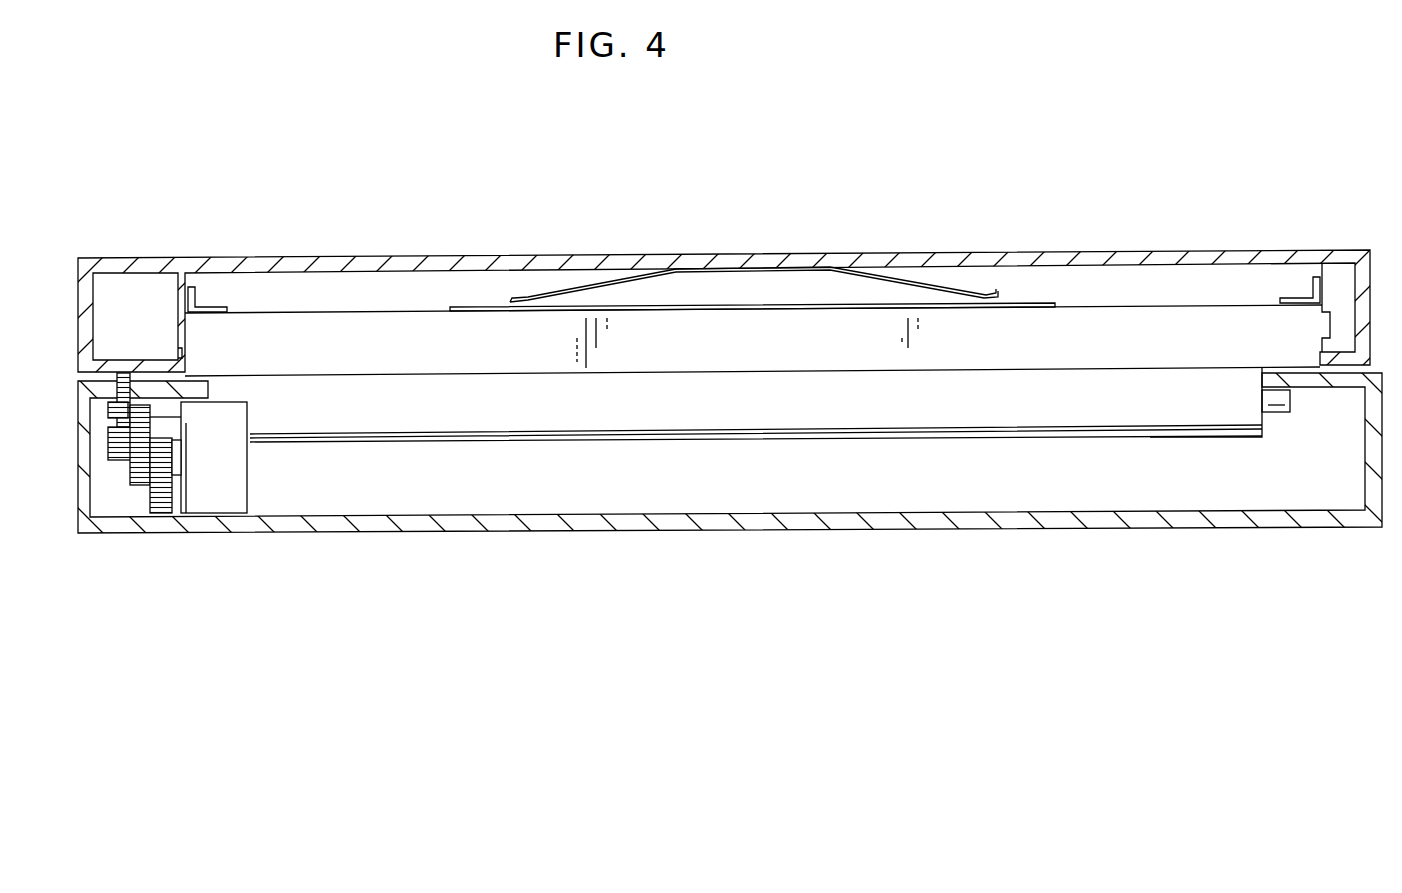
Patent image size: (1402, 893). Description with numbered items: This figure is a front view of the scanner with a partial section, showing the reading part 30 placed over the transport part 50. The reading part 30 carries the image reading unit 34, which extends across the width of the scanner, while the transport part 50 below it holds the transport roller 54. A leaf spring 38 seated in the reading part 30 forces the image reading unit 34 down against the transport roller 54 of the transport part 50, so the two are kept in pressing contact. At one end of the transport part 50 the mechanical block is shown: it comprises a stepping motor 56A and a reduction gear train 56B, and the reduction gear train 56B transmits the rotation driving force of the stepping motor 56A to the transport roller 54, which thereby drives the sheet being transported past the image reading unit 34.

The reading part 30 is at (805, 250).
The image reading unit 34 is at (1092, 330).
The leaf spring 38 is at (903, 285).
The transport part 50 is at (793, 530).
The transport roller 54 is at (697, 423).
The stepping motor 56A is at (215, 500).
The reduction gear train 56B is at (125, 493).